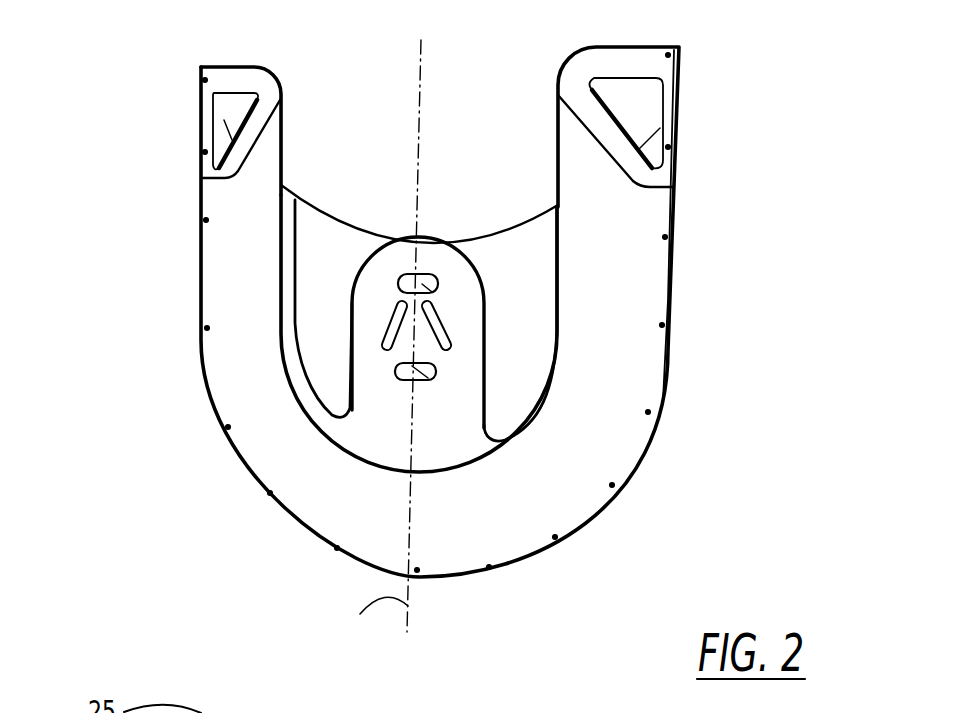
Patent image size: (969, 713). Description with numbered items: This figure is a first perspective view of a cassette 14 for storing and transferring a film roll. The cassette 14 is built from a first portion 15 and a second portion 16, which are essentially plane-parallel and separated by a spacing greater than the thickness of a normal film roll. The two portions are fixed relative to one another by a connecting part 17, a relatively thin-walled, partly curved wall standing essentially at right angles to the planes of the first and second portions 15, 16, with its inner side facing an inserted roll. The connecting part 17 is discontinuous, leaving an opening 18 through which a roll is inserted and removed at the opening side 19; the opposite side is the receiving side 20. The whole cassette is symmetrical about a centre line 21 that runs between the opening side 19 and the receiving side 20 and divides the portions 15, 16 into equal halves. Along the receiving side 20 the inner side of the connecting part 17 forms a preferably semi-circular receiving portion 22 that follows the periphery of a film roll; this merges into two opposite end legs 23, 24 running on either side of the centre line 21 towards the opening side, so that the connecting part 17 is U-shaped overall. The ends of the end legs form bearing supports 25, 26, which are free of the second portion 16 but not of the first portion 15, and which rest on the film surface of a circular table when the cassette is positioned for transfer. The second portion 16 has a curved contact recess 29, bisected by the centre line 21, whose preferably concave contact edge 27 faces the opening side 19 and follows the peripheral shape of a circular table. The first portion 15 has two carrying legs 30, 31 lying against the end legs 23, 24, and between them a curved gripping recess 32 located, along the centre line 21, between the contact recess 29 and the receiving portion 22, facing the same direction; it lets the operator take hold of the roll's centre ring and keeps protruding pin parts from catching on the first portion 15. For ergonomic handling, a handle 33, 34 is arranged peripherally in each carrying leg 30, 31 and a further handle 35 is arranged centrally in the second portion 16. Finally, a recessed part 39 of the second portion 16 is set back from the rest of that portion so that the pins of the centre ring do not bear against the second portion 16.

The cassette 14 is at (722, 343).
The first portion 15 is at (314, 500).
The second portion 16 is at (405, 415).
The connecting part 17 is at (677, 302).
The opening 18 is at (447, 160).
The opening side 19 is at (407, 137).
The receiving side 20 is at (465, 587).
The centre line 21 is at (364, 606).
The receiving portion 22 is at (505, 574).
The end leg 23 is at (676, 218).
The end leg 24 is at (199, 193).
The bearing support 25 is at (681, 75).
The bearing support 26 is at (226, 115).
The contact edge 27 is at (398, 233).
The contact recess 29 is at (475, 220).
The carrying leg 30 is at (575, 120).
The carrying leg 31 is at (262, 132).
The gripping recess 32 is at (442, 482).
The handle 33 is at (629, 96).
The handle 34 is at (234, 108).
The handle 35 is at (398, 332).
The recessed part 39 is at (315, 318).